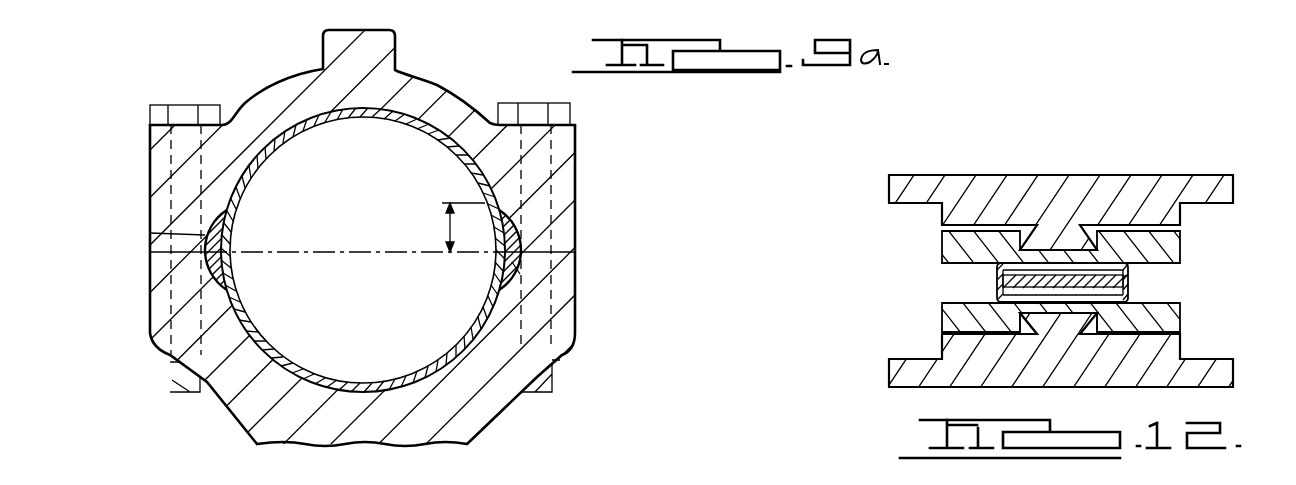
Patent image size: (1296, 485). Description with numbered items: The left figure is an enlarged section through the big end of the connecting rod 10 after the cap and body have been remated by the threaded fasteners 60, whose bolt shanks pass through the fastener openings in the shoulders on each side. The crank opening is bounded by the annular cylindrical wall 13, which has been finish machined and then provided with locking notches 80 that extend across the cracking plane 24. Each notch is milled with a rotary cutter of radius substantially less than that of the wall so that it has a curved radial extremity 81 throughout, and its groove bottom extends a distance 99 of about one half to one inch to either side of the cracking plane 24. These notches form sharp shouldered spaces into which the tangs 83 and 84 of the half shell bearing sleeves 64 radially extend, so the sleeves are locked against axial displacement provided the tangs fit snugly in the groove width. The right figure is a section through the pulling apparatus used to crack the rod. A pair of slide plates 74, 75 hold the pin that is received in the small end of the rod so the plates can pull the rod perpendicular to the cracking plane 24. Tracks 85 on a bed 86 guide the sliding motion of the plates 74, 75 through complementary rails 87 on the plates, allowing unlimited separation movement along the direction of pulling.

In FIG. 9A, the threaded fasteners 60 is at (150, 163).
In FIG. 9A, the tang 83 is at (150, 233).
In FIG. 9A, the curved radial extremity 81 is at (218, 216).
In FIG. 9A, the locking notches 80 is at (212, 283).
In FIG. 9A, the half round or shell bearing sleeves 64 is at (267, 350).
In FIG. 9A, the annular cylindrical wall 13 is at (371, 393).
In FIG. 9A, the cracking plane 24 is at (558, 245).
In FIG. 9A, the tang 84 is at (525, 274).
In FIG. 9A, the distance 99 is at (450, 220).
In FIG. 12, the bed 86 is at (1013, 190).
In FIG. 12, the tracks 85 is at (1022, 247).
In FIG. 12, the slide plate 74 is at (947, 247).
In FIG. 12, the slide plate 75 is at (1170, 312).
In FIG. 12, the rails 87 is at (1017, 320).
In FIG. 12, the connecting rod 10 is at (1130, 284).